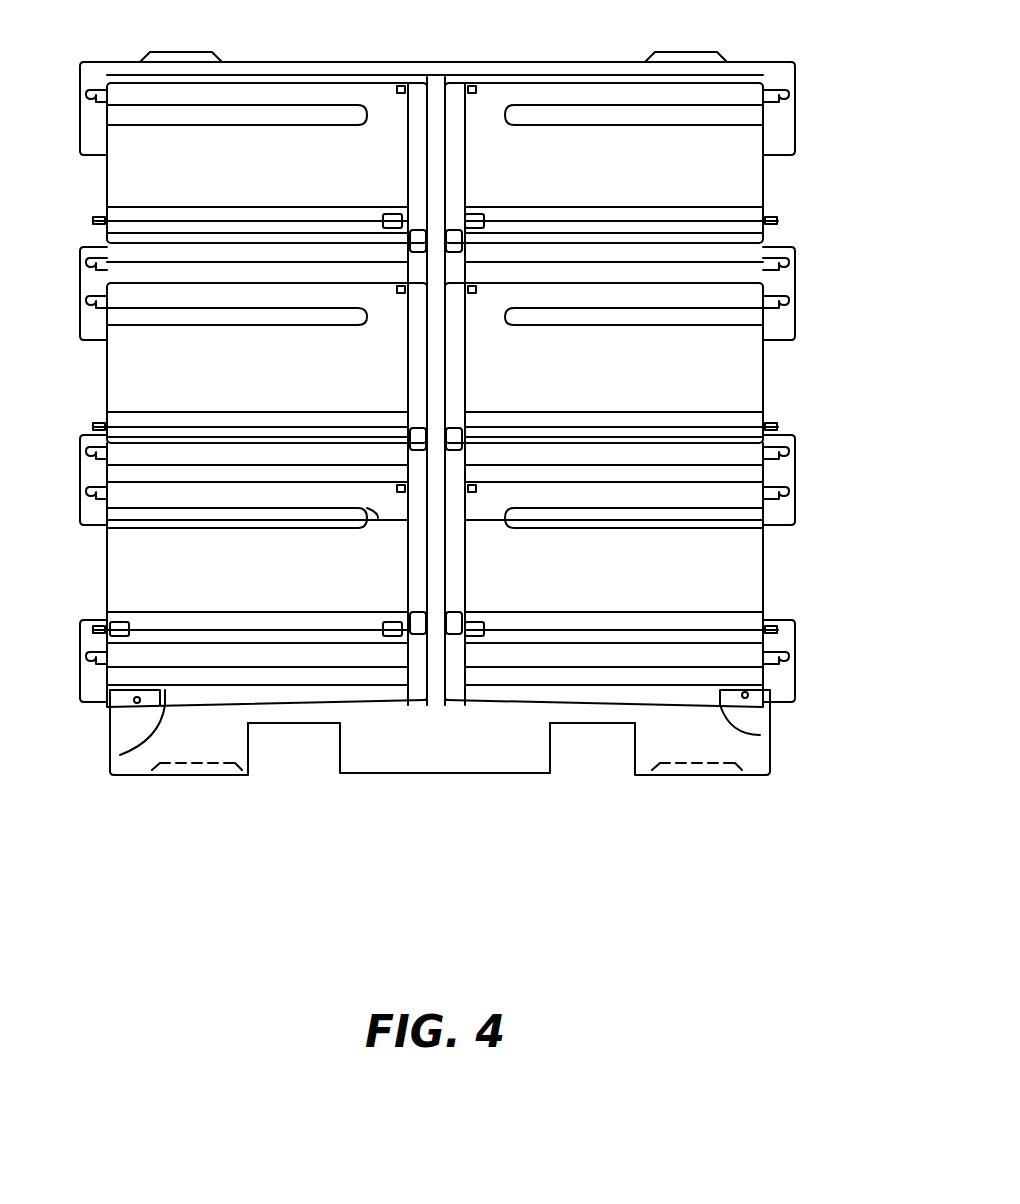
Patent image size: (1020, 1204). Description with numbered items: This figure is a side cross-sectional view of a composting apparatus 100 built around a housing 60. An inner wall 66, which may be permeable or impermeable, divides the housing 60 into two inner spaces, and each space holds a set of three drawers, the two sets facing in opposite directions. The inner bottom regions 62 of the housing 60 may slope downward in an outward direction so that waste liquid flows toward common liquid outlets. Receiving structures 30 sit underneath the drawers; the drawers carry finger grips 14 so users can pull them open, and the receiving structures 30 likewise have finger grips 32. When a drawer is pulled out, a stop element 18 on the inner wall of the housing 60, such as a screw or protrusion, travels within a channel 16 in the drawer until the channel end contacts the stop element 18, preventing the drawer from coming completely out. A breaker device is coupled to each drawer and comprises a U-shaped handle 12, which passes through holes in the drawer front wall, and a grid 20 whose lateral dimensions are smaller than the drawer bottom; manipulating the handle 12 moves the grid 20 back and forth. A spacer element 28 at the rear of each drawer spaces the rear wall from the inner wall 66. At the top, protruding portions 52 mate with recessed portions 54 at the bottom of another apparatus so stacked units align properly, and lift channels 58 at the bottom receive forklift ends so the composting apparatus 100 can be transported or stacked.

The composting apparatus 100 is at (818, 62).
The housing 60 is at (490, 62).
The protruding portions 52 is at (203, 52).
The inner wall 66 is at (437, 100).
The finger grips 14 is at (96, 522).
The handle 12 is at (100, 632).
The finger grips 32 is at (105, 664).
The receiving structures 30 is at (156, 690).
The recessed portions 54 is at (205, 776).
The lift channels 58 is at (318, 750).
The inner bottom regions 62 is at (165, 708).
The stop element 18 is at (142, 526).
The channel 16 is at (318, 531).
The grid 20 is at (322, 220).
The spacer element 28 is at (418, 235).